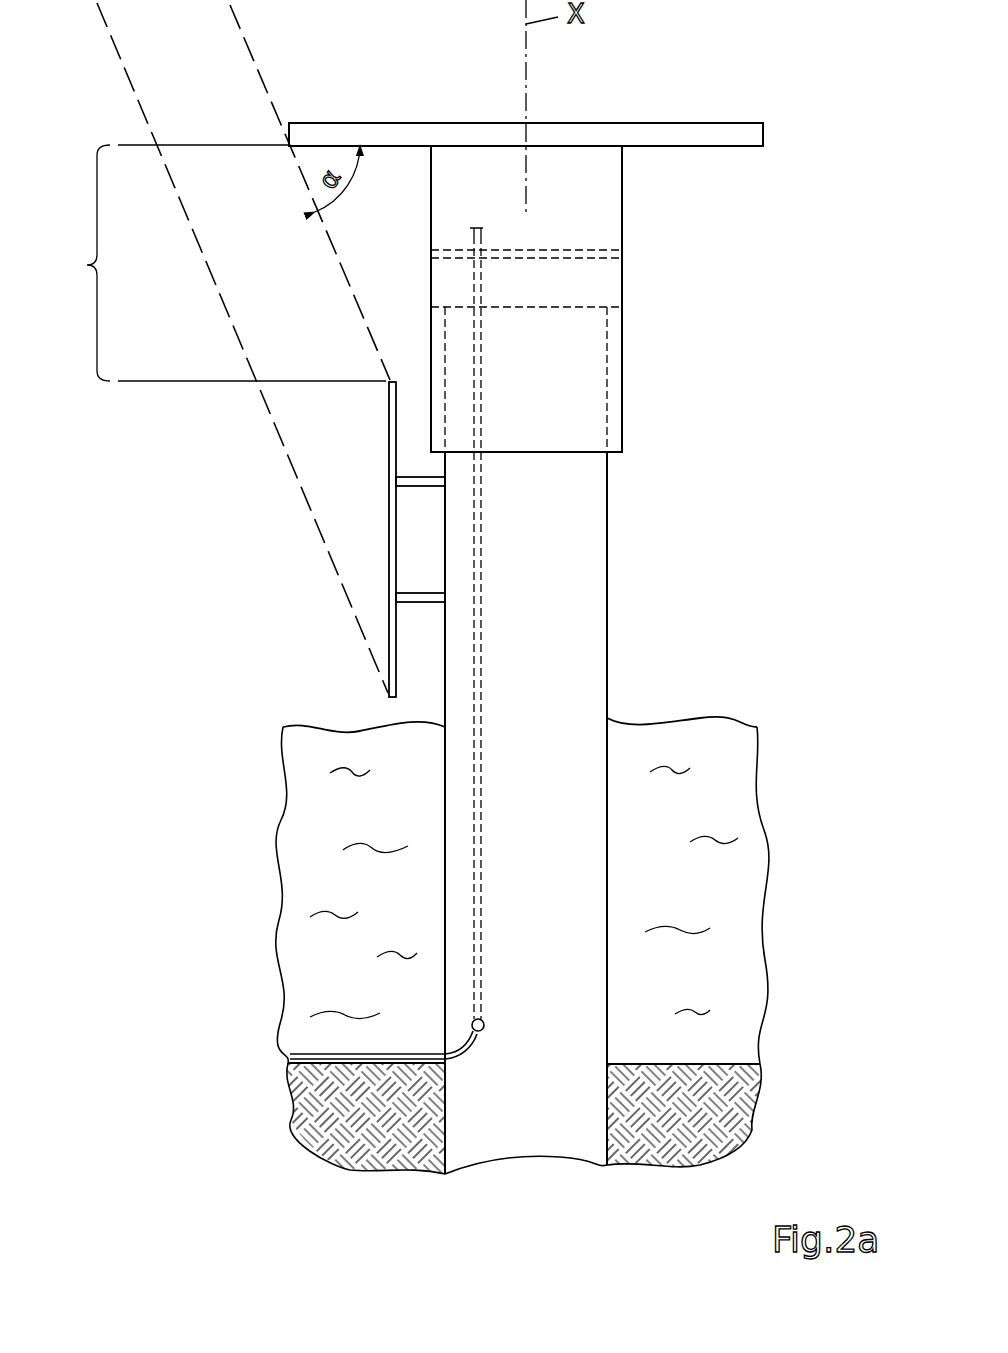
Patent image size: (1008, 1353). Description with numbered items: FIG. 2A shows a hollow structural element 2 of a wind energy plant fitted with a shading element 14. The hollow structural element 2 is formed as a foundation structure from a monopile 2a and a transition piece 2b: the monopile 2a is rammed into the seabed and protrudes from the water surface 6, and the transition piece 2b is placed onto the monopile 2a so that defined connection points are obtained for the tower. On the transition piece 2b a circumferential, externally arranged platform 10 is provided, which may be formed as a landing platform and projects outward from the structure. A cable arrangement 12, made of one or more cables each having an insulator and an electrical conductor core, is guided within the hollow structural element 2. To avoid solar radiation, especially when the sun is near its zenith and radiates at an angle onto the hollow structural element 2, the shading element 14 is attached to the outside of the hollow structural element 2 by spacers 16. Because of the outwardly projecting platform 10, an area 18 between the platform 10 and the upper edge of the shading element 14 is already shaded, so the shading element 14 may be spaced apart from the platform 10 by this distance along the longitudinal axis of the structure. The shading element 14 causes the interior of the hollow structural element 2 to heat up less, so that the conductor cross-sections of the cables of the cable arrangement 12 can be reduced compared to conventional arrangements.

The hollow structural element 2 is at (717, 390).
The monopile 2a is at (608, 535).
The transition piece 2b is at (622, 222).
The water surface 6 is at (705, 718).
The platform 10 is at (682, 135).
The cable arrangement 12 is at (477, 773).
The shading element 14 is at (393, 528).
The spacer 16 is at (422, 598).
The area 18 is at (222, 263).